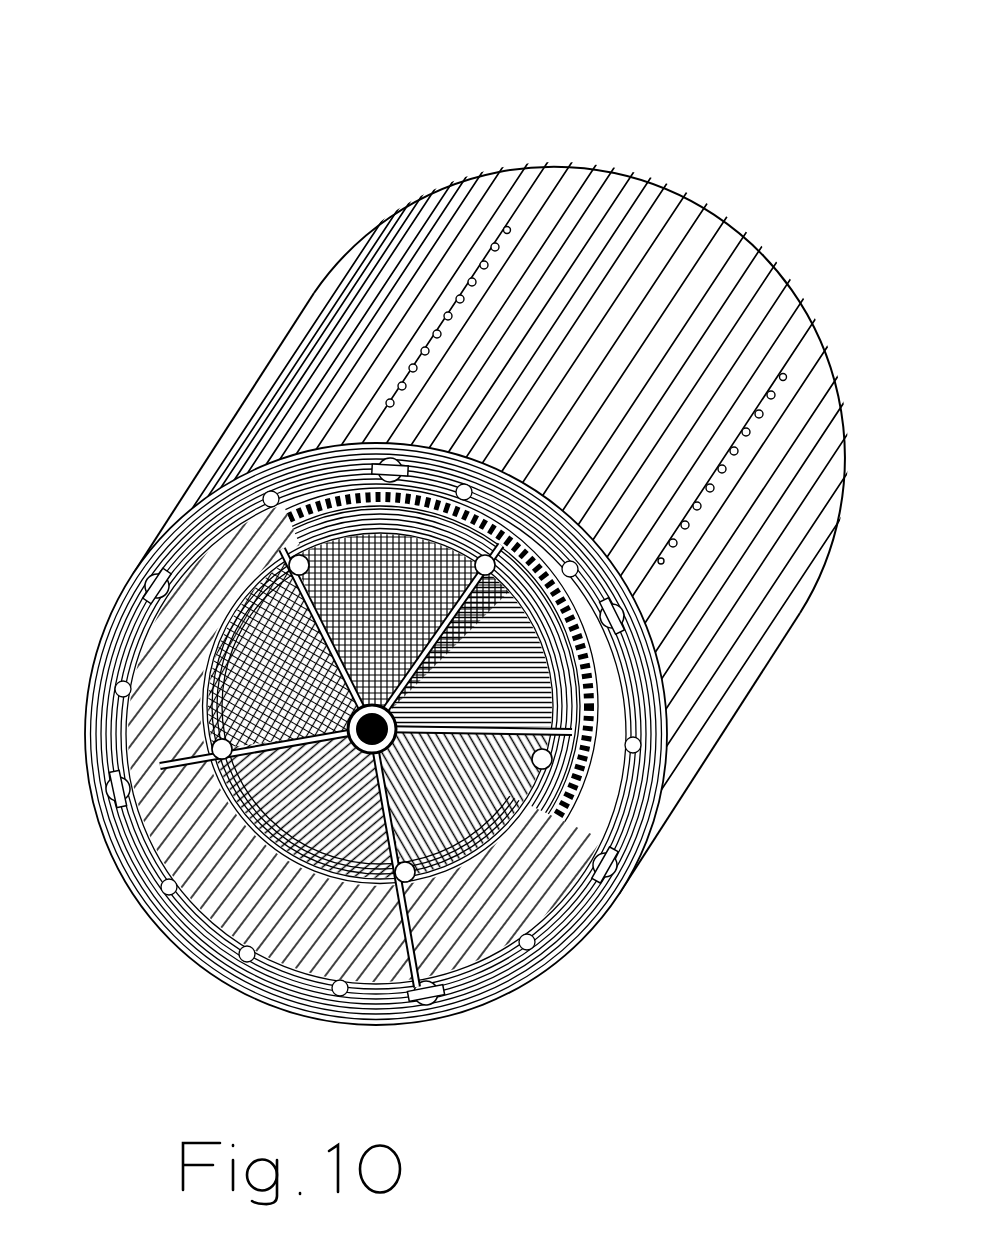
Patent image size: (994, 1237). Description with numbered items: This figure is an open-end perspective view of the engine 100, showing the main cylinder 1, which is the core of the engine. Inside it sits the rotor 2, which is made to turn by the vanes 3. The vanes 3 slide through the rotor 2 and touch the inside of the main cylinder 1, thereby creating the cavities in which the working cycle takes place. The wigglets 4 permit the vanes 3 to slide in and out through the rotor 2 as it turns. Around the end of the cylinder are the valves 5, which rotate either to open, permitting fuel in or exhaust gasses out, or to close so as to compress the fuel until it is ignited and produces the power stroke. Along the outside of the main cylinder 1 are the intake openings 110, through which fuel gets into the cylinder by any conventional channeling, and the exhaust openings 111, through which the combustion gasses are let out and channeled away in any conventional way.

The filter assembly 100 is at (524, 525).
The main cylinder 1 is at (740, 716).
The rotor 2 is at (516, 856).
The vanes 3 is at (394, 931).
The wigglets 4 is at (214, 790).
The valves 5 is at (146, 572).
The intake openings 110 is at (703, 536).
The exhaust openings 111 is at (458, 340).